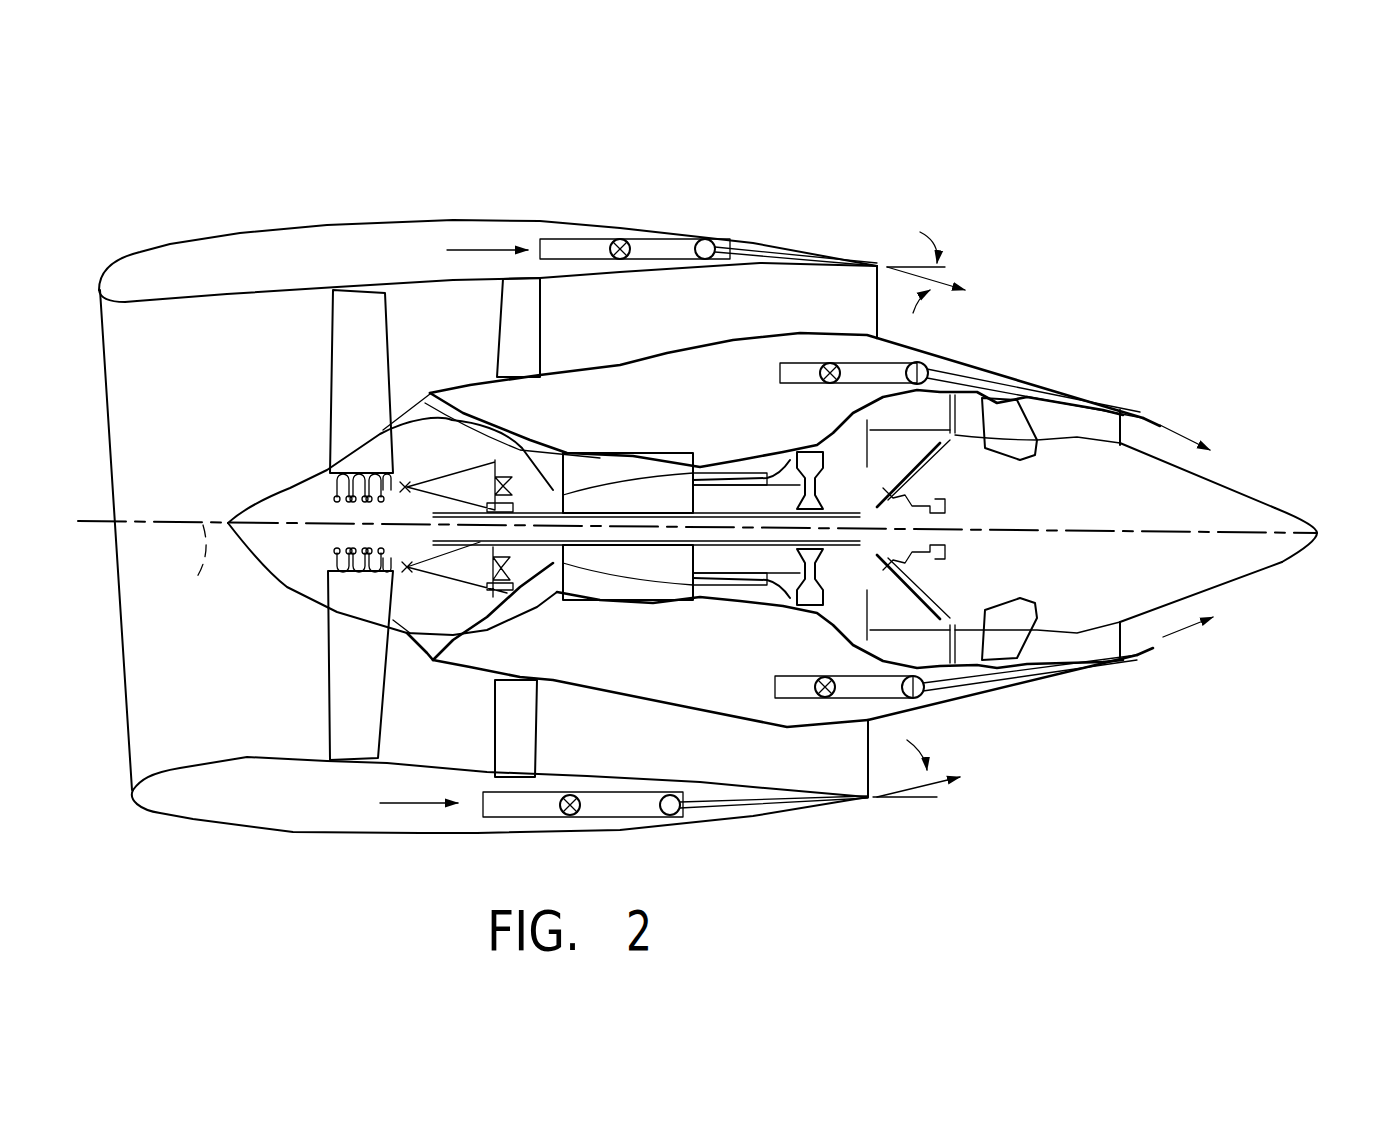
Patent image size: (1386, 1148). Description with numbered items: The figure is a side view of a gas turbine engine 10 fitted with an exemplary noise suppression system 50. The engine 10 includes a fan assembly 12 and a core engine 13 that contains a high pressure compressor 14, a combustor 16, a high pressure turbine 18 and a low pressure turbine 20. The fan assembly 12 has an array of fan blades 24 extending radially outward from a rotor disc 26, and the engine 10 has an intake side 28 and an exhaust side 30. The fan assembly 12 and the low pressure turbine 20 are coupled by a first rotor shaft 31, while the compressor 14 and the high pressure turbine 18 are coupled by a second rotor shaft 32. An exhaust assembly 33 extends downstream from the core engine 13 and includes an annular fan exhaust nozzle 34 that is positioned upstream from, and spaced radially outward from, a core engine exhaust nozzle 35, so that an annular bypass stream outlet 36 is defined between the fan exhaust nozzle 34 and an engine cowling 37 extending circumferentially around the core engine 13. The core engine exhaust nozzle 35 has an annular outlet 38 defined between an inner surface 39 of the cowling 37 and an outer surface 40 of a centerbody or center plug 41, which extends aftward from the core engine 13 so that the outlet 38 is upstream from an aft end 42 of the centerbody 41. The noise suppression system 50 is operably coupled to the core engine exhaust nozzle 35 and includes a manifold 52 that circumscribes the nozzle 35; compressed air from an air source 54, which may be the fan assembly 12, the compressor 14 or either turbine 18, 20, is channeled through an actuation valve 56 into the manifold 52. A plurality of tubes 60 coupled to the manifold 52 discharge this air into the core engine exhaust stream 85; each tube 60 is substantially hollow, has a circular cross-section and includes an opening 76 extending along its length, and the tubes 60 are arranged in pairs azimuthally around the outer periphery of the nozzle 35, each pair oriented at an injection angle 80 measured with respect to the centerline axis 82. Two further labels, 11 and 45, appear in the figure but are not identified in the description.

The gas turbine engine 10 is at (865, 86).
The core engine 11 is at (638, 660).
The fan assembly 12 is at (467, 645).
The core engine 13 is at (750, 367).
The high pressure compressor 14 is at (583, 470).
The combustor 16 is at (768, 463).
The high pressure turbine 18 is at (817, 447).
The low pressure turbine 20 is at (913, 408).
The fan blades 24 is at (347, 360).
The rotor disc 26 is at (295, 492).
The intake side 28 is at (83, 322).
The exhaust side 30 is at (968, 243).
The first rotor shaft 31 is at (713, 483).
The second rotor shaft 32 is at (727, 512).
The exhaust assembly 33 is at (1140, 303).
The annular fan exhaust nozzle 34 is at (230, 255).
The core engine exhaust nozzle 35 is at (1050, 385).
The annular bypass stream outlet 36 is at (882, 320).
The engine cowling 37 is at (967, 364).
The annular outlet 38 is at (1140, 447).
The inner surface 39 is at (1110, 628).
The outer surface 40 is at (1243, 495).
The centerbody 41 is at (1280, 525).
The aft end 42 is at (1320, 534).
The flap trailing edge 45 is at (1140, 410).
The noise suppression system 50 is at (1118, 172).
The manifold 52 is at (706, 238).
The air source 54 is at (487, 243).
The actuation valve 56 is at (616, 238).
The tubes 60 is at (735, 247).
The opening 76 is at (1160, 420).
The injection angle 80 is at (920, 232).
The centerline axis 82 is at (185, 588).
The core engine exhaust stream 85 is at (1226, 440).